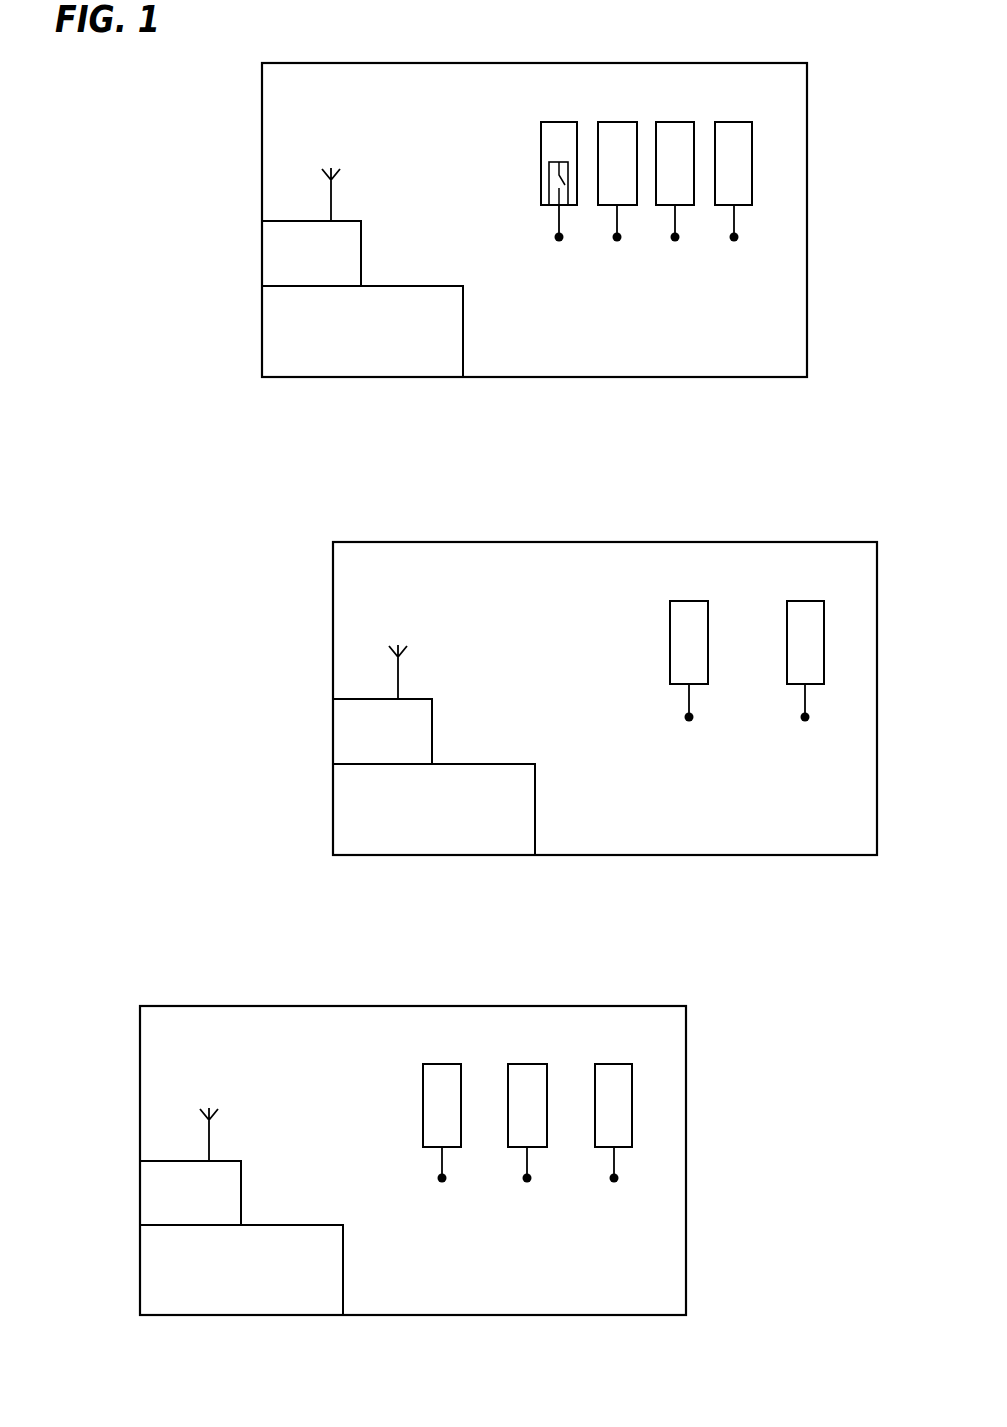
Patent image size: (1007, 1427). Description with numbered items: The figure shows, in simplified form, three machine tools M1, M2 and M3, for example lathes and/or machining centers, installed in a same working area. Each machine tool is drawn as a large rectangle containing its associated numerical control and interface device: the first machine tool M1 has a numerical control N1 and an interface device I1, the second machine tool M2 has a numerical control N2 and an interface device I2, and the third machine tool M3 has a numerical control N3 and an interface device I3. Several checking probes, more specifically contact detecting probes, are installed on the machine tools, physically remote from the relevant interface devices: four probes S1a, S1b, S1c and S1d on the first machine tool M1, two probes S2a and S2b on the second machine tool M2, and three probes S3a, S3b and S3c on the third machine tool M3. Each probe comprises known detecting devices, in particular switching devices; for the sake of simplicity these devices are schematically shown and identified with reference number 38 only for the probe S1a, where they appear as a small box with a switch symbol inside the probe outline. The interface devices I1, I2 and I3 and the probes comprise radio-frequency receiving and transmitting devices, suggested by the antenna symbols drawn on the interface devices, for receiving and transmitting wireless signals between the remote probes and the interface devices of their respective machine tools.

The switching devices 38 is at (568, 168).
The contact detecting probe S1a is at (562, 133).
The contact detecting probe S1b is at (620, 135).
The contact detecting probe S1c is at (678, 135).
The contact detecting probe S1d is at (737, 135).
The machine tool M1 is at (742, 294).
The interface device I1 is at (288, 250).
The numerical control N1 is at (290, 338).
The machine tool M2 is at (378, 610).
The interface device I2 is at (360, 728).
The numerical control N2 is at (362, 818).
The contact detecting probe S2a is at (690, 612).
The contact detecting probe S2b is at (806, 615).
The machine tool M3 is at (620, 1237).
The interface device I3 is at (167, 1190).
The numerical control N3 is at (170, 1278).
The contact detecting probe S3a is at (442, 1075).
The contact detecting probe S3b is at (525, 1077).
The contact detecting probe S3c is at (613, 1080).